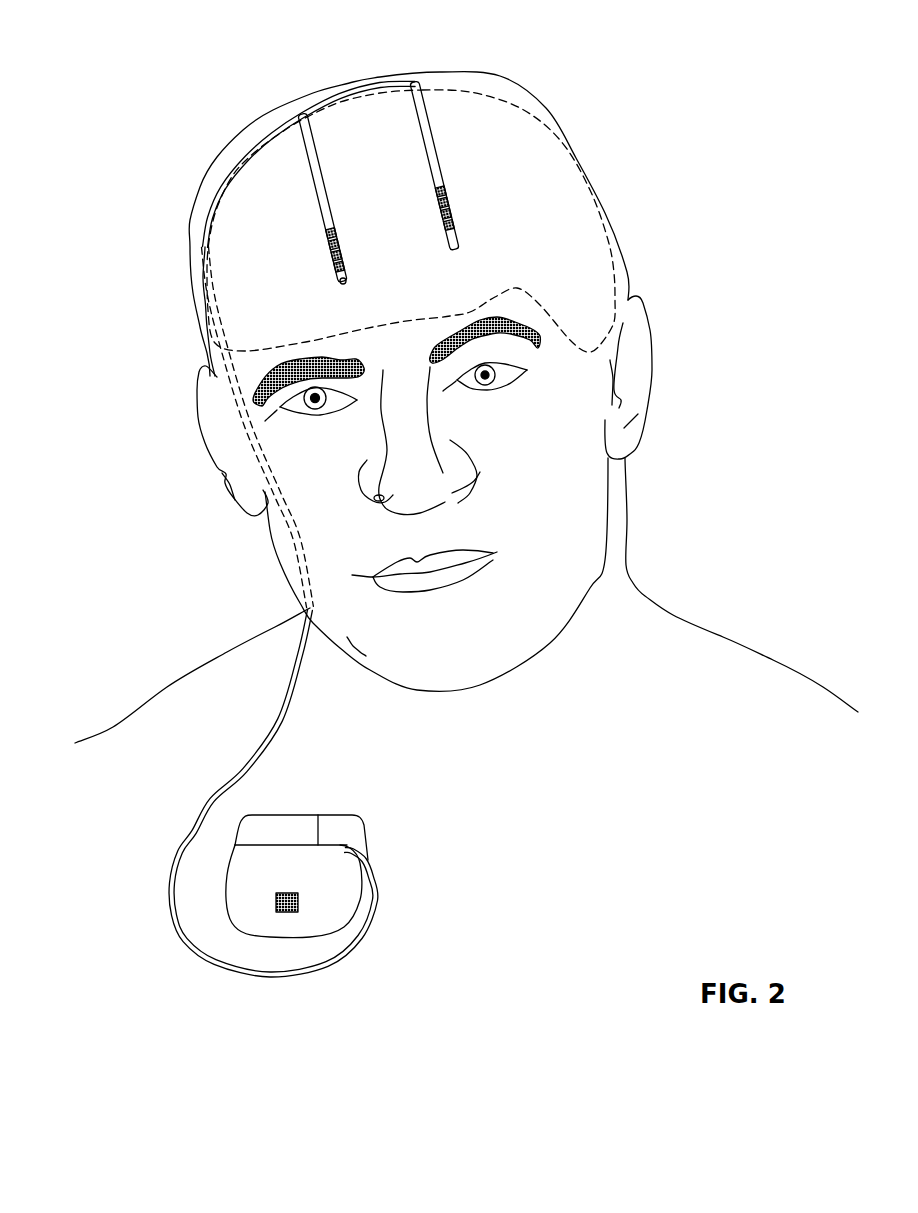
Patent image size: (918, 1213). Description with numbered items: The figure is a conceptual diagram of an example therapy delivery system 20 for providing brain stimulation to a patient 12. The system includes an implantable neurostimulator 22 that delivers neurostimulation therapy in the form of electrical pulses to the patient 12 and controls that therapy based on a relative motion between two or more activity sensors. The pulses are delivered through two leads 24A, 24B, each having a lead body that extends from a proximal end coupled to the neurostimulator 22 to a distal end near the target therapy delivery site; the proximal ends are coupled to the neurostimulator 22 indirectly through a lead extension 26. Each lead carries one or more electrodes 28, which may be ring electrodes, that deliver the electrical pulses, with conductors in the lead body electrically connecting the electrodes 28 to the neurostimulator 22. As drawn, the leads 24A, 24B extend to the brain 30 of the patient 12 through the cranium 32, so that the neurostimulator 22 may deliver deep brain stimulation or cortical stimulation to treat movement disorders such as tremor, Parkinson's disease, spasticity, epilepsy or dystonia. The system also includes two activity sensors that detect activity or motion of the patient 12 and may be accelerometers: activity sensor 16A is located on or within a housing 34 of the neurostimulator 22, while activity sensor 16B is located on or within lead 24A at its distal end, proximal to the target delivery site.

The patient 12 is at (466, 407).
The activity sensor 16A is at (305, 905).
The activity sensor 16B is at (335, 280).
The therapy delivery system 20 is at (745, 67).
The implantable neurostimulator 22 is at (288, 844).
The lead 24A is at (328, 187).
The lead 24B is at (440, 155).
The lead extension 26 is at (267, 730).
The electrodes 28 is at (340, 218).
The brain 30 is at (578, 166).
The cranium 32 is at (628, 270).
The housing 34 is at (227, 884).